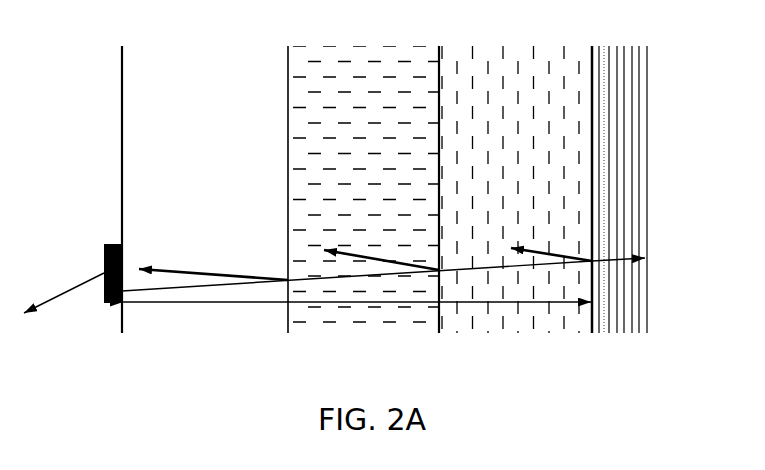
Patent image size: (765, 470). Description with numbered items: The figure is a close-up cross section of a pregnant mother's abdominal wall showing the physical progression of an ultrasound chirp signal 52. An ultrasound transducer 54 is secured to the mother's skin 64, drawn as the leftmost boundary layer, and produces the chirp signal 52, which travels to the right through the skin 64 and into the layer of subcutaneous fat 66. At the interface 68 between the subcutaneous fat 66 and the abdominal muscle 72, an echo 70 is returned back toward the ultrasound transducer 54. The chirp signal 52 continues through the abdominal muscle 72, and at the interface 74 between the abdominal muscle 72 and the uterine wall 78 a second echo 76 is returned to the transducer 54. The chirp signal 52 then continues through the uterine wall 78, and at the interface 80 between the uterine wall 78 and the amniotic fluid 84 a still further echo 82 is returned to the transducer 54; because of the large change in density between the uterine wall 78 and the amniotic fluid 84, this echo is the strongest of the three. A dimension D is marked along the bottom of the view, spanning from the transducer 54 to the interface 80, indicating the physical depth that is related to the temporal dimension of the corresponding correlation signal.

The ultrasound chirp signal 52 is at (362, 276).
The ultrasound transducer 54 is at (104, 244).
The mother's skin 64 is at (122, 133).
The layer of subcutaneous fat 66 is at (214, 166).
The interface 68 is at (288, 133).
The echo 70 is at (256, 277).
The abdominal muscle 72 is at (374, 166).
The interface 74 is at (439, 125).
The echo 76 is at (395, 262).
The uterine wall 78 is at (526, 166).
The interface 80 is at (592, 118).
The echo 82 is at (562, 257).
The amniotic fluid 84 is at (631, 166).
The distance D is at (357, 316).